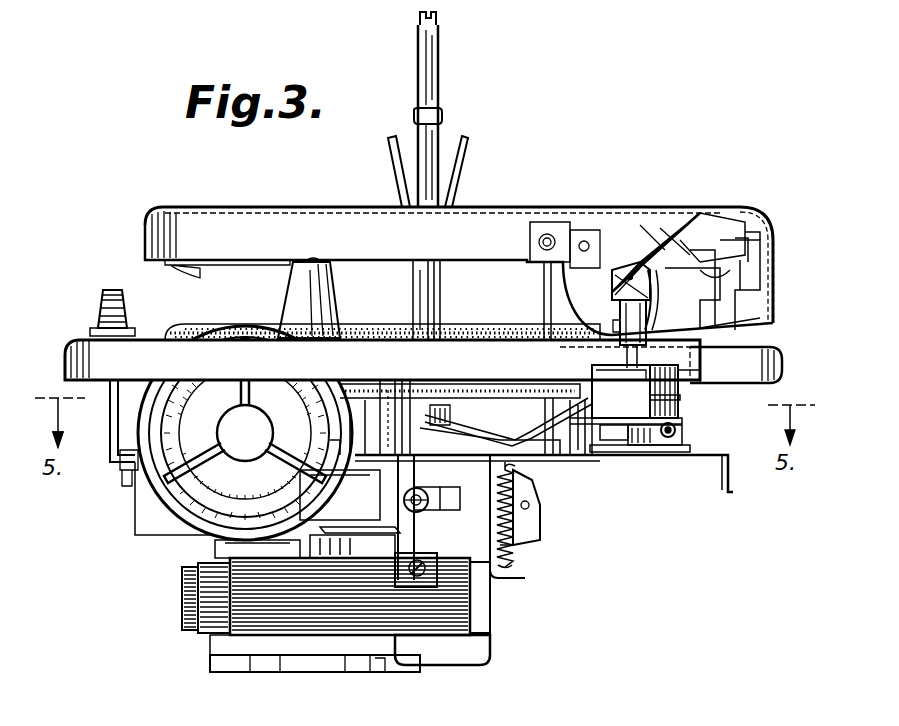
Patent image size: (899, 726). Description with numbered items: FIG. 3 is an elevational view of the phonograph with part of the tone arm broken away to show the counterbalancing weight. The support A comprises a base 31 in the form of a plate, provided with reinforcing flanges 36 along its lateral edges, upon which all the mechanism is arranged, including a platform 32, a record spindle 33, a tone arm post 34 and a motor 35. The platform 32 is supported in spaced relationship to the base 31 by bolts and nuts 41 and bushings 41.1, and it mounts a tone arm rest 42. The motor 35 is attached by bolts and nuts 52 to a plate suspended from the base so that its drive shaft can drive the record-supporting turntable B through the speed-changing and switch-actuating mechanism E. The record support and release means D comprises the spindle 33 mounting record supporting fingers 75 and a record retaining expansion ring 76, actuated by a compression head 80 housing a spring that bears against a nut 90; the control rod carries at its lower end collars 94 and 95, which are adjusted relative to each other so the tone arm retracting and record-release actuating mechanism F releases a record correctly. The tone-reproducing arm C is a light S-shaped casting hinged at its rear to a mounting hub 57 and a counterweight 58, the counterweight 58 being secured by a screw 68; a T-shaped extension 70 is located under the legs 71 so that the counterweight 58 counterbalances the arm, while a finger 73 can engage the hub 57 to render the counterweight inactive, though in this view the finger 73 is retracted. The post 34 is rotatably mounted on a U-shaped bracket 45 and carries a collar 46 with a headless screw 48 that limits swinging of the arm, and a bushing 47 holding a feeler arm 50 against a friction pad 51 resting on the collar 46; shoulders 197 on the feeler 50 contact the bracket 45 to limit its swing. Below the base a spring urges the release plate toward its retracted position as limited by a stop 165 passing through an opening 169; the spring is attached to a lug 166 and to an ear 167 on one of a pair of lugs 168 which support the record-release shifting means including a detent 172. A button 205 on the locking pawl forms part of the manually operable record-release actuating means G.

The nut 90 is at (438, 22).
The compression head 80 is at (440, 48).
The record retaining expansion ring 76 is at (412, 116).
The record supporting arms or fingers 75 is at (386, 150).
The screw 68 is at (705, 210).
The legs 71 is at (748, 235).
The T-shaped extension 70 is at (750, 250).
The finger or detent 73 is at (665, 300).
The counterweight 58 is at (712, 298).
The mounting hub 57 is at (615, 290).
The feeler arm 50 is at (628, 360).
The bushing 47 is at (683, 378).
The U-shaped bracket 45 is at (680, 398).
The shoulders 197 is at (685, 421).
The headless screw 48 is at (675, 432).
The collar 46 is at (655, 450).
The friction pad 51 is at (622, 455).
The base 31 is at (596, 458).
The reinforcing flanges 36 is at (125, 488).
The tone arm post 34 is at (635, 391).
The record spindle 33 is at (430, 292).
The tone arm rest 42 is at (332, 290).
The bushings 41.1 is at (421, 404).
The bolts and nuts 41 is at (420, 465).
The button 205 is at (98, 296).
The platform 32 is at (68, 365).
The motor 35 is at (195, 615).
The detent 172 is at (350, 501).
The collar 95 is at (428, 520).
The collar 94 is at (437, 560).
The bolts and nuts 52 is at (375, 672).
The stop 165 is at (518, 474).
The lug 166 is at (535, 500).
The lugs 168 is at (540, 538).
The opening 169 is at (535, 540).
The ear 167 is at (505, 570).
The support A is at (722, 470).
The record-supporting turntable B is at (496, 320).
The tone-reproducing arm C is at (302, 206).
The record support and release means D is at (484, 130).
The speed-changing and switch-actuating mechanism E is at (263, 394).
The tone arm retracting and record-release actuating mechanism F is at (478, 498).
The manually operable record-release actuating means G is at (108, 420).